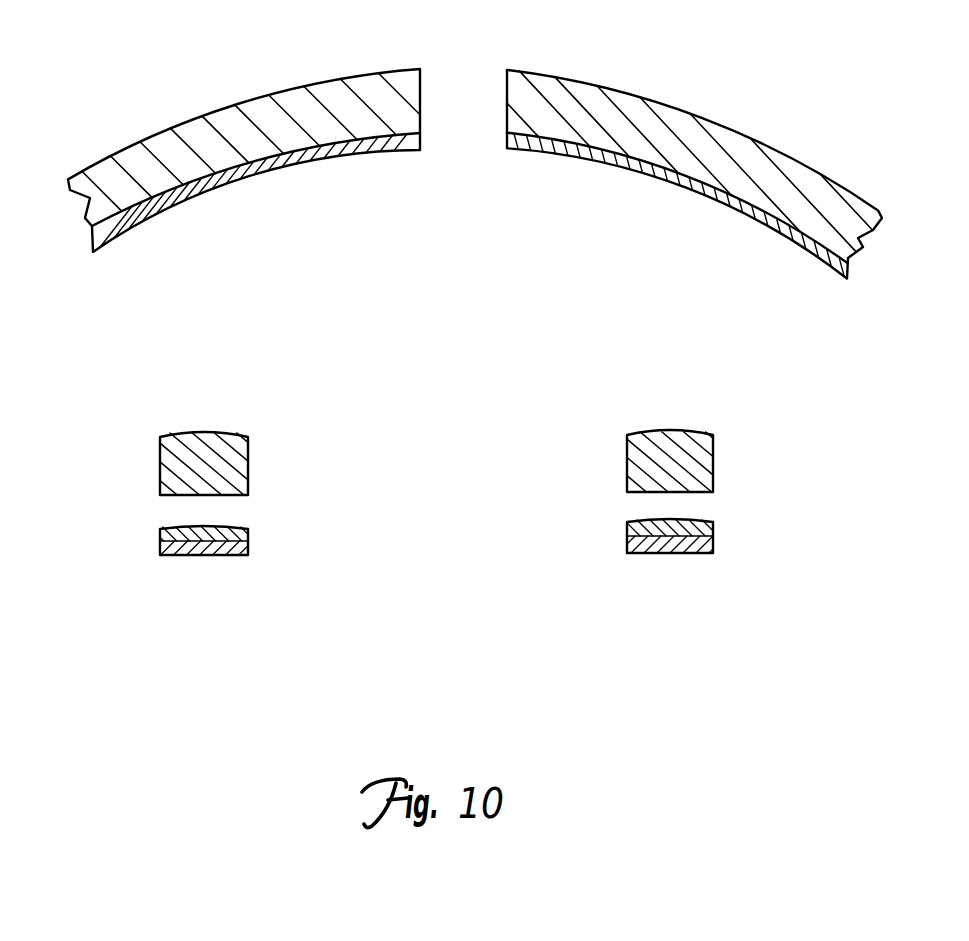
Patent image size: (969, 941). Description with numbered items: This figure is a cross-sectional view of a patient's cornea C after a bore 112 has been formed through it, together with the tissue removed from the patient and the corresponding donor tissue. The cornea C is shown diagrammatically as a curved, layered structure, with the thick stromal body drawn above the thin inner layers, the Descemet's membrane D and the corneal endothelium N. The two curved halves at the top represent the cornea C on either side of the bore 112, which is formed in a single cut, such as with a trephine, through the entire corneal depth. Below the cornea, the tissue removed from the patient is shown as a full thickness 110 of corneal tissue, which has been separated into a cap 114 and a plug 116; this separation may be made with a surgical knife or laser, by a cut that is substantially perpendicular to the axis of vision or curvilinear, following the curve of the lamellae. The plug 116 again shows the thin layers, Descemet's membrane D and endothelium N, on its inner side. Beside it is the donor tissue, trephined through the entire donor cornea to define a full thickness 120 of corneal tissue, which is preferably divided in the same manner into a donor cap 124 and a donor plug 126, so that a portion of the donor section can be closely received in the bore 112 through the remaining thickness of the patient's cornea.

The bore 112 is at (478, 78).
The cornea C is at (160, 132).
The Descemet's membrane D is at (225, 173).
The corneal endothelium N is at (303, 167).
The full thickness of corneal tissue 110 is at (196, 497).
The cap 114 is at (160, 457).
The plug 116 is at (162, 543).
The full thickness of donor corneal tissue 120 is at (671, 494).
The donor cap 124 is at (627, 468).
The donor plug 126 is at (628, 545).